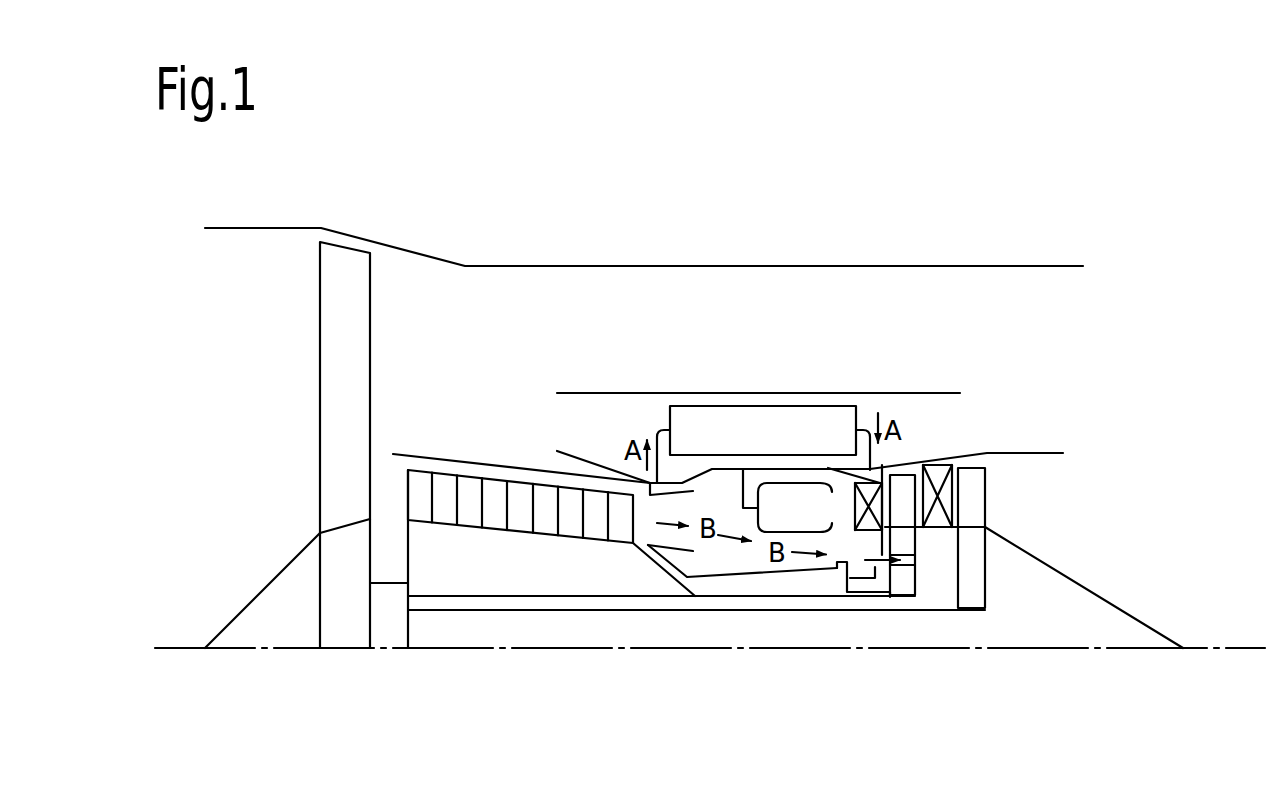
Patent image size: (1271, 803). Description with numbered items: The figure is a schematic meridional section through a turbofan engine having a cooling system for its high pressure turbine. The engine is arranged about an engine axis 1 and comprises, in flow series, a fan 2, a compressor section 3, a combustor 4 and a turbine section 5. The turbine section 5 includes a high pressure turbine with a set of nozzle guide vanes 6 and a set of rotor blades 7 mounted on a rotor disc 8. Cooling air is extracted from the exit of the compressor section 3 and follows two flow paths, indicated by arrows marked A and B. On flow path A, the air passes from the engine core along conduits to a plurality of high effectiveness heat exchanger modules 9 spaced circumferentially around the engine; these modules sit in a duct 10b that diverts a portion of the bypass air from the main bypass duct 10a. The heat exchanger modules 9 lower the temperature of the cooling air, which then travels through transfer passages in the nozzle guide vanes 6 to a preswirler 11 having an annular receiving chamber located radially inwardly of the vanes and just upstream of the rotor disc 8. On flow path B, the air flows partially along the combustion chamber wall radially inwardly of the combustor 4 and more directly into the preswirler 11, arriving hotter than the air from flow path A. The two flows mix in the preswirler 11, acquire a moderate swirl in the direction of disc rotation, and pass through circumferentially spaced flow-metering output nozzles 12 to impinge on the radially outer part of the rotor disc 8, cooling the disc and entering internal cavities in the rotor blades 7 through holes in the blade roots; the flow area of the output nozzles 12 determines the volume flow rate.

The engine axis 1 is at (475, 649).
The fan 2 is at (370, 279).
The compressor section 3 is at (518, 470).
The combustor 4 is at (795, 483).
The turbine section 5 is at (920, 452).
The nozzle guide vanes 6 is at (878, 510).
The rotor blades 7 is at (907, 495).
The rotor disc 8 is at (917, 578).
The heat exchanger modules 9 is at (728, 404).
The main bypass duct 10a is at (573, 312).
The duct 10b is at (645, 403).
The preswirler 11 is at (865, 568).
The output nozzles 12 is at (878, 570).